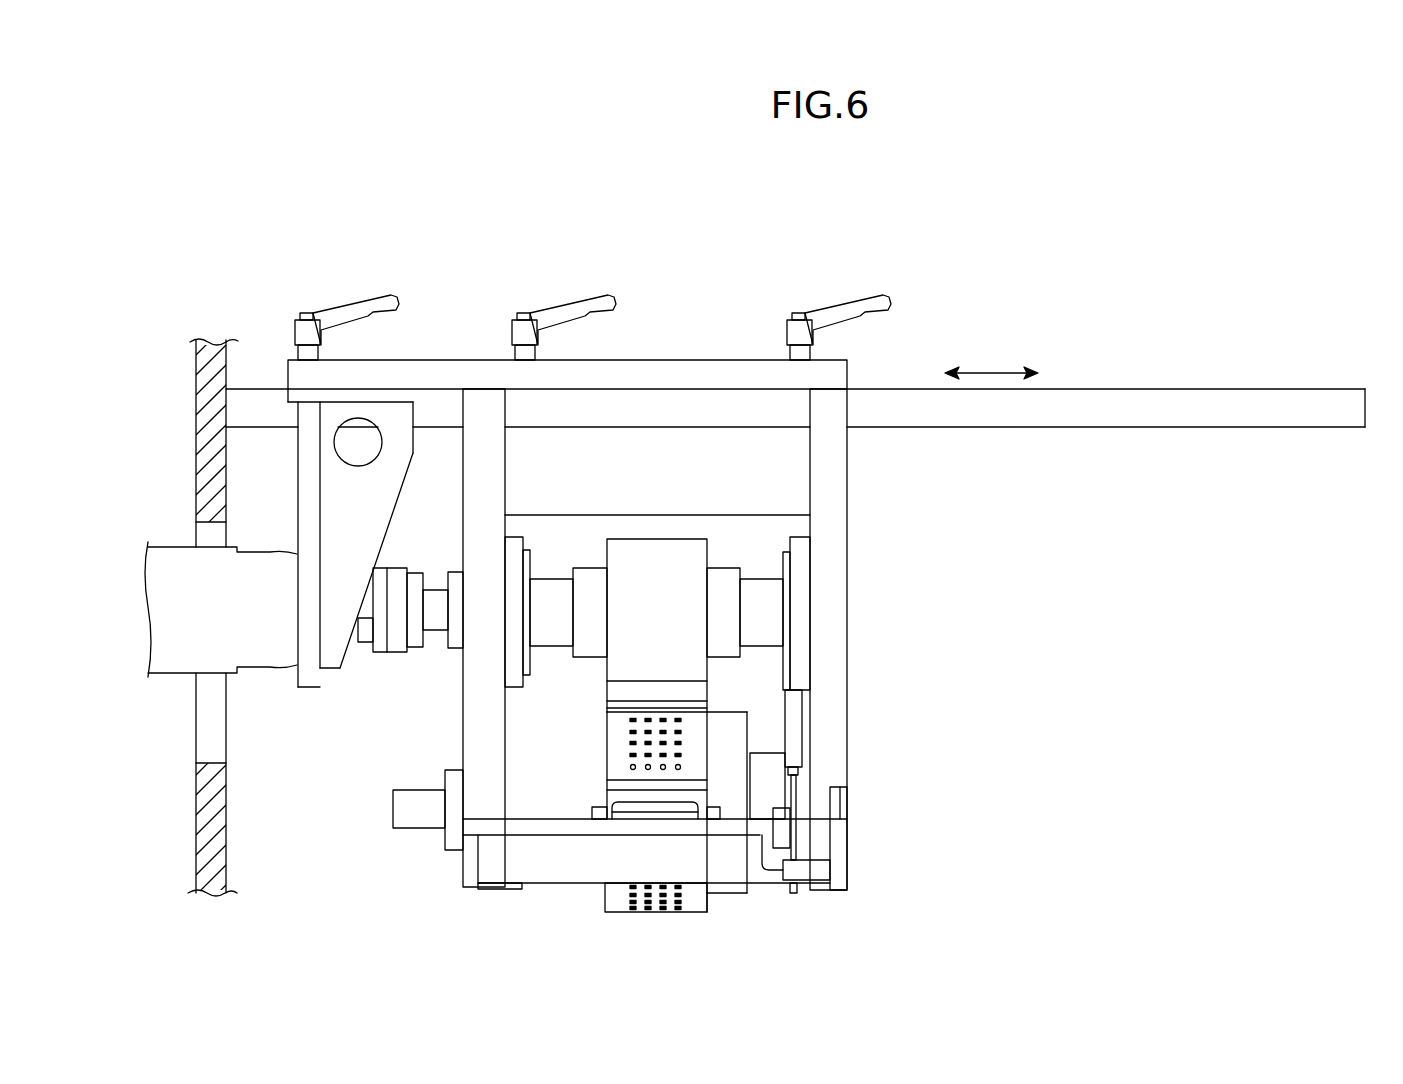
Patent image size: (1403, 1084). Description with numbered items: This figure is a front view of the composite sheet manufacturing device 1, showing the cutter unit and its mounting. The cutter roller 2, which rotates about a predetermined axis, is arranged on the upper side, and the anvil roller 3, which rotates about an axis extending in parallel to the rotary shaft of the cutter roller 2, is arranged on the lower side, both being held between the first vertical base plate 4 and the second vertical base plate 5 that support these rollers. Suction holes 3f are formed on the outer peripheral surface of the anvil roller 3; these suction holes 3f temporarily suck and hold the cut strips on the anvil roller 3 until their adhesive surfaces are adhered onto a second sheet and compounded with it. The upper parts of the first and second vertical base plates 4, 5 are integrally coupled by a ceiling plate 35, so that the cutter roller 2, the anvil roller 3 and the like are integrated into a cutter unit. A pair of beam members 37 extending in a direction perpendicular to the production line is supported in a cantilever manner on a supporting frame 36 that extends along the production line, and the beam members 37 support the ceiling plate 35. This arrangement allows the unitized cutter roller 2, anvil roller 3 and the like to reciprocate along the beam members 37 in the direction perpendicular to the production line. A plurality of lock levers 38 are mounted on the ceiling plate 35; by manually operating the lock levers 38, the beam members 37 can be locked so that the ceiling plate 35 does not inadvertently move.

The composite sheet manufacturing device 1 is at (697, 342).
The cutter roller 2 is at (555, 578).
The anvil roller 3 is at (727, 780).
The suction holes 3f is at (632, 743).
The first vertical base plate 4 is at (468, 683).
The second vertical base plate 5 is at (832, 722).
The ceiling plate 35 is at (637, 375).
The supporting frame 36 is at (210, 466).
The beam members 37 is at (1100, 402).
The lock levers 38 is at (358, 308).